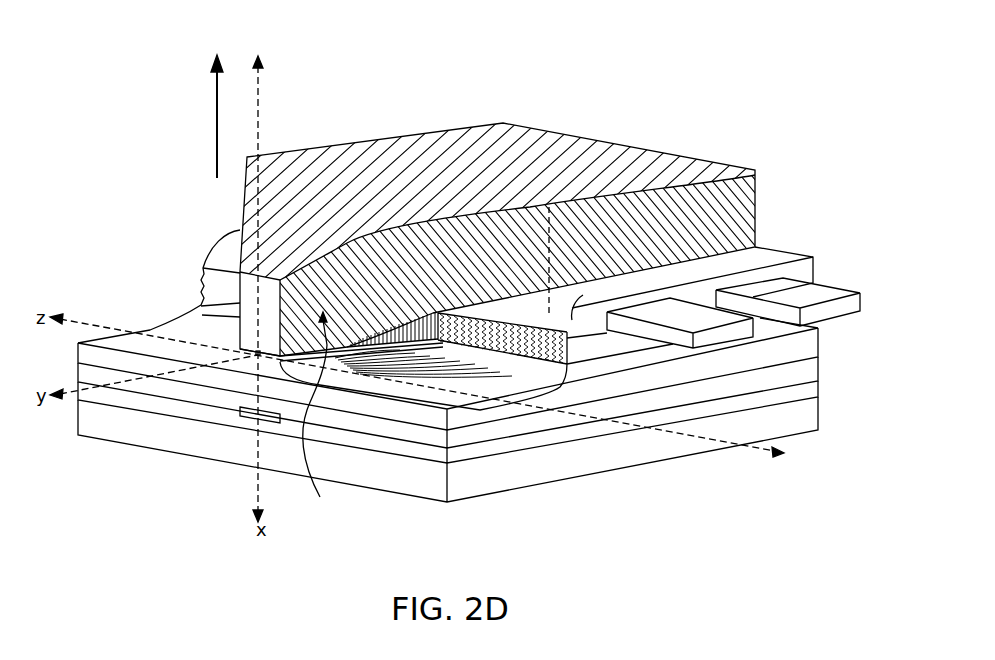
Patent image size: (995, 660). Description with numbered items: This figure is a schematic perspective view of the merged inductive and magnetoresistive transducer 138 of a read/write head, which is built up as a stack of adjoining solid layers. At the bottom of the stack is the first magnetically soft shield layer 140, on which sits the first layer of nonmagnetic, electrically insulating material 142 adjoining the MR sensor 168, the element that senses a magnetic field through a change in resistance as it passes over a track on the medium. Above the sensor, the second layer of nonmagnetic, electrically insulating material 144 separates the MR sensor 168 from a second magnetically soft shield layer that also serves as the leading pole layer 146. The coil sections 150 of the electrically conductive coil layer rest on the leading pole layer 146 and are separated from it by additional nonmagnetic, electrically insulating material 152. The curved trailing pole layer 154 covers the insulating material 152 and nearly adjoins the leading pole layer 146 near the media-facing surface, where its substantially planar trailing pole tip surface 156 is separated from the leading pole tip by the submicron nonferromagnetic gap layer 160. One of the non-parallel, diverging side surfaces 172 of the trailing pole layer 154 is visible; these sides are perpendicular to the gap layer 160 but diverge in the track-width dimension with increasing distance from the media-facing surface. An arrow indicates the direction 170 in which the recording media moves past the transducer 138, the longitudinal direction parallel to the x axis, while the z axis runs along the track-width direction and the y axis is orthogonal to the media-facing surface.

The transducer 138 is at (511, 68).
The first magnetically soft shield layer 140 is at (820, 414).
The first layer of nonmagnetic, electrically insulating material 142 is at (820, 388).
The second layer of nonmagnetic, electrically insulating material 144 is at (820, 364).
The leading pole layer 146 is at (820, 332).
The coil sections 150 is at (688, 318).
The nonmagnetic, electrically insulating material 152 is at (593, 318).
The trailing pole layer 154 is at (738, 199).
The trailing pole tip surface 156 is at (248, 326).
The submicron nonferromagnetic gap layer 160 is at (628, 352).
The MR sensor 168 is at (243, 420).
The direction 170 is at (213, 108).
The diverging side surfaces 172 is at (323, 417).